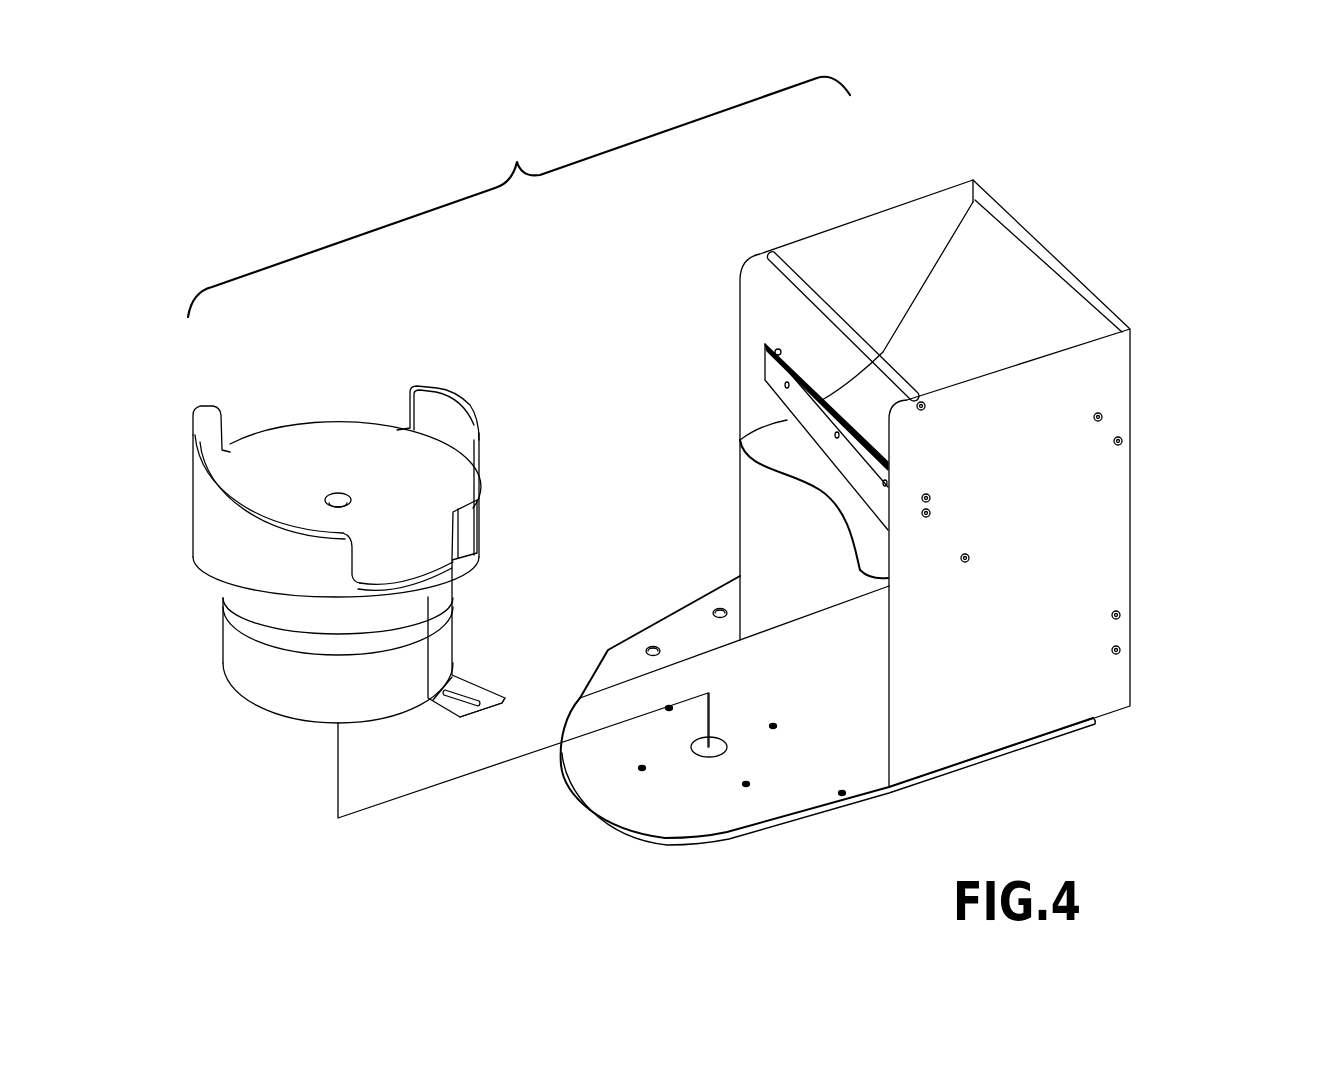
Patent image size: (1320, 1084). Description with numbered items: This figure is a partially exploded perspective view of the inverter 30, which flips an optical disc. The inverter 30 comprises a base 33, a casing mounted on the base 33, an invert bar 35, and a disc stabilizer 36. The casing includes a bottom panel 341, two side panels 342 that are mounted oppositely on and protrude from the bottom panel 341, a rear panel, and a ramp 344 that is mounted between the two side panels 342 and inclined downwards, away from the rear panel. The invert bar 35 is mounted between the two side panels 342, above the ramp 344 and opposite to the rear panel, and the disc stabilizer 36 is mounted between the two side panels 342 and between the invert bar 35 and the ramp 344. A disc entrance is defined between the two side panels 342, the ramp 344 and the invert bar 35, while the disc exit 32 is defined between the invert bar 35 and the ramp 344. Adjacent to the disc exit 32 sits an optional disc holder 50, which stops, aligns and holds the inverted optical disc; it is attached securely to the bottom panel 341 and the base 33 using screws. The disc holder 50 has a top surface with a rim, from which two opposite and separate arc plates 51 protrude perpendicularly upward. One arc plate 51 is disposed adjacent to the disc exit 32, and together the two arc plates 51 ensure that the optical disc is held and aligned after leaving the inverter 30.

The inverter 30 is at (878, 182).
The disc exit 32 is at (805, 462).
The base 33 is at (780, 835).
The invert bar 35 is at (828, 315).
The disc stabilizer 36 is at (792, 418).
The disc holder 50 is at (332, 433).
The arc plates 51 is at (207, 450).
The bottom panel 341 is at (676, 807).
The side panels 342 is at (828, 250).
The ramp 344 is at (1026, 290).